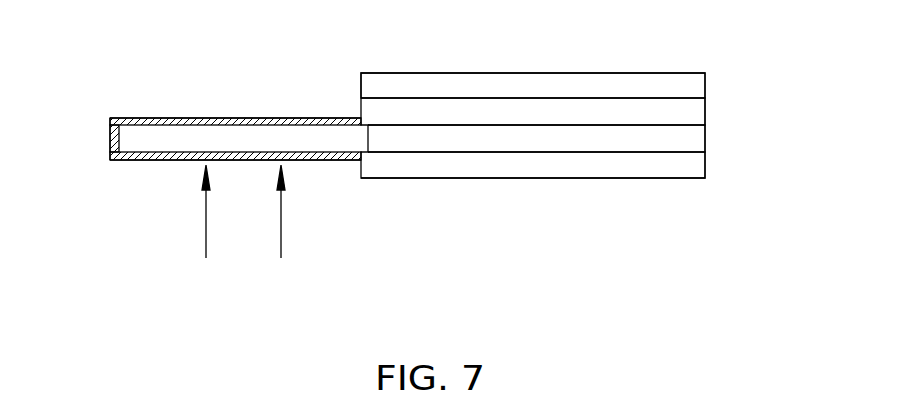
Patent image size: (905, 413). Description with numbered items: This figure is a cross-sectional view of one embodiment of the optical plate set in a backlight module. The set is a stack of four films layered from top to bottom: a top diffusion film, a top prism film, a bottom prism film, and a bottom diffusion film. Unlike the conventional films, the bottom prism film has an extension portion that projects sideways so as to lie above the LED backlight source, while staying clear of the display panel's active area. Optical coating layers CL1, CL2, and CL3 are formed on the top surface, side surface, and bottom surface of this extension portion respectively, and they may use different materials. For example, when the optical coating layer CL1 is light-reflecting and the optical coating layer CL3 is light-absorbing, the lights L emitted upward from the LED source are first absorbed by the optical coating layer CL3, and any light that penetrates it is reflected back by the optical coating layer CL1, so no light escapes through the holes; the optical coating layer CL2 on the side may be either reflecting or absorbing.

The optical coating layer CL1 is at (203, 118).
The optical coating layer CL2 is at (110, 149).
The optical coating layer CL3 is at (312, 160).
The lights L is at (243, 226).